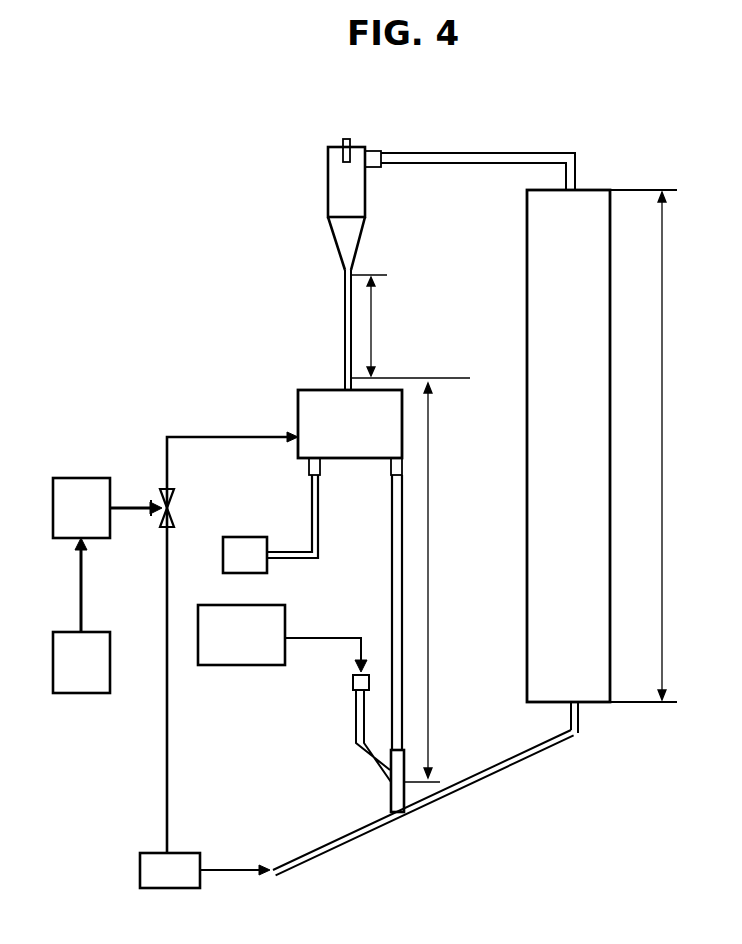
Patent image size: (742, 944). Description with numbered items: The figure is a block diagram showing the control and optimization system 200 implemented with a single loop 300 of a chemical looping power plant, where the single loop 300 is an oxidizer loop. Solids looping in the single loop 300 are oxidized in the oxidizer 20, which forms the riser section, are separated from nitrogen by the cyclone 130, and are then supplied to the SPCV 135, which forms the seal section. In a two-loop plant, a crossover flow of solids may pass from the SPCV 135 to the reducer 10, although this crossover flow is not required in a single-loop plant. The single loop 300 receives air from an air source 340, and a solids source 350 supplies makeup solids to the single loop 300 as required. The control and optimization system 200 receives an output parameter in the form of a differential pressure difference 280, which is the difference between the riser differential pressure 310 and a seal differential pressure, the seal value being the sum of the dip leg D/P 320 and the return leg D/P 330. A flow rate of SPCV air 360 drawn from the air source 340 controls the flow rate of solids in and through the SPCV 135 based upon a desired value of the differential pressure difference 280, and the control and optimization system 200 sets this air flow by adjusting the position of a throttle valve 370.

The single loop 300 is at (602, 113).
The cyclone 130 is at (451, 204).
The dip leg D/P 320 is at (373, 333).
The SPCV 135 is at (350, 432).
The reducer 10 is at (270, 524).
The return leg D/P 330 is at (433, 605).
The solids source 350 is at (294, 693).
The oxidizer 20 is at (602, 461).
The riser differential pressure 310 is at (663, 390).
The air source 340 is at (205, 870).
The SPCV air 360 is at (213, 433).
The throttle valve 370 is at (172, 503).
The control and optimization system 200 is at (107, 508).
The differential pressure difference 280 is at (81, 615).